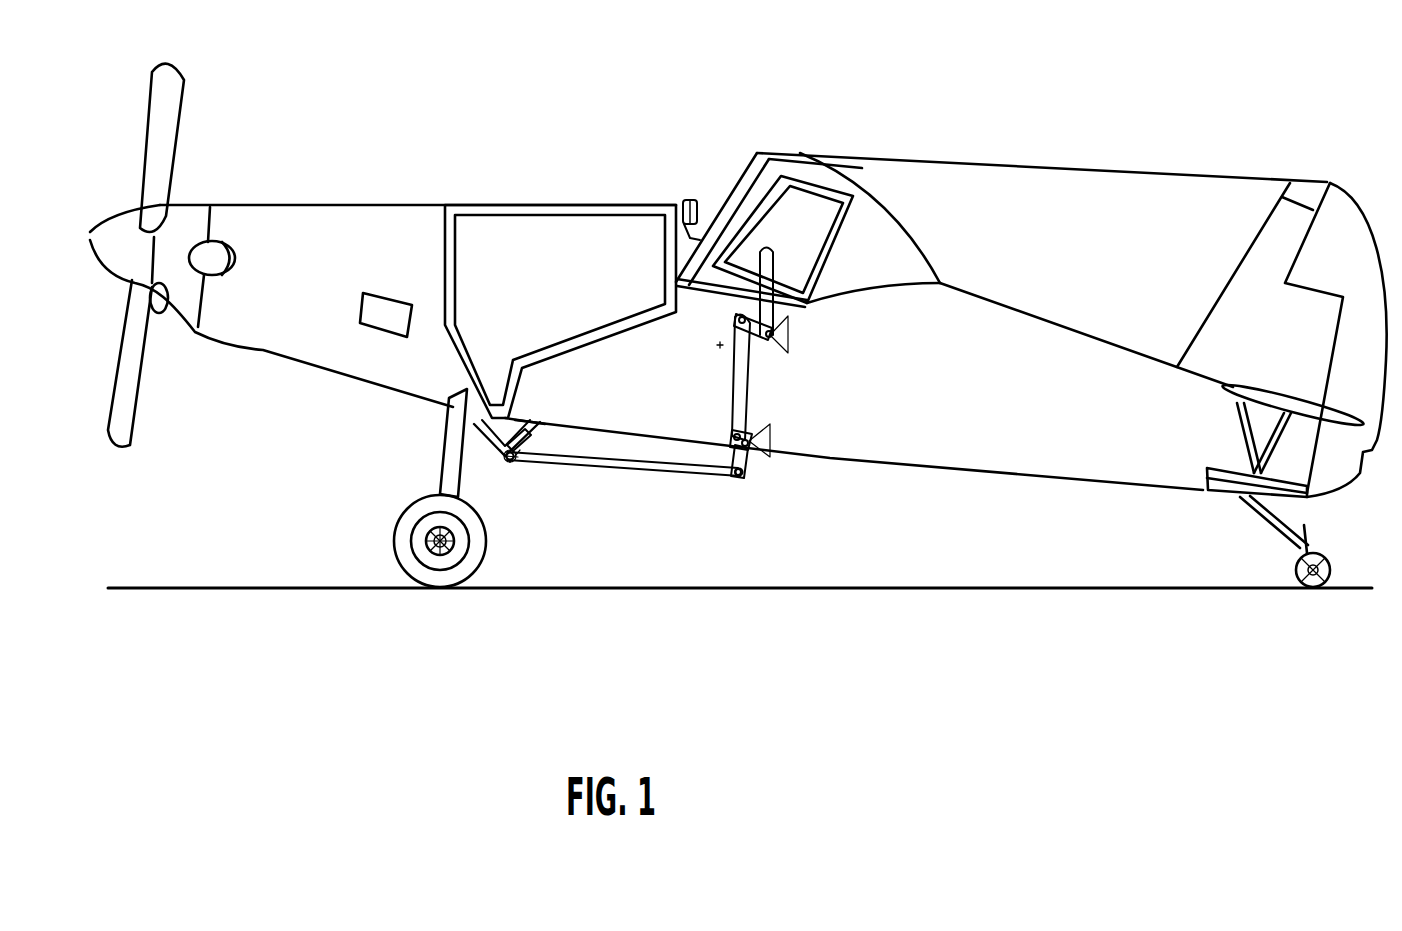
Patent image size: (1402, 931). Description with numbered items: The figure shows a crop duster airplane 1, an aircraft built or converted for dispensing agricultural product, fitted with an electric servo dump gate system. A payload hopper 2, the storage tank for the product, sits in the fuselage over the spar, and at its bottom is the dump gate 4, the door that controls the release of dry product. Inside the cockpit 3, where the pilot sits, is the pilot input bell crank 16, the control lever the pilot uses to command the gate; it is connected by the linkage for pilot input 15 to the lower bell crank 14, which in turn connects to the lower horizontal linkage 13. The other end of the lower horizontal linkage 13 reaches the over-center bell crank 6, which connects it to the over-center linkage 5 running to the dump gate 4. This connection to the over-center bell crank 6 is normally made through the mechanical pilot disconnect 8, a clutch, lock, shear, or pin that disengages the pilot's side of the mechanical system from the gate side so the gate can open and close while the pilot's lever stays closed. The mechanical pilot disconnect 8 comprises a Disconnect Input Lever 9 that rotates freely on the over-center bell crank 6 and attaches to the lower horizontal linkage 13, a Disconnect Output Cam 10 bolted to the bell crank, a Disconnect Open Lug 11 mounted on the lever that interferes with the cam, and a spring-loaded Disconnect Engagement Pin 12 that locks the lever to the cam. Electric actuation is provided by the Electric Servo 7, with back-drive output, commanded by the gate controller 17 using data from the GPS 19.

The crop duster airplane 1 is at (323, 203).
The payload hopper 2 is at (550, 202).
The cockpit 3 is at (723, 170).
The dump gate 4 is at (493, 434).
The over-center linkage 5 is at (497, 455).
The over-center bell crank 6 is at (540, 428).
The Electric Servo 7 is at (540, 442).
The mechanical pilot disconnect 8 is at (633, 563).
The Disconnect Input Lever 9 is at (510, 456).
The Disconnect Output Cam 10 is at (511, 456).
The Disconnect Open Lug 11 is at (505, 456).
The Disconnect Engagement Pin 12 is at (515, 456).
The lower horizontal linkage 13 is at (652, 472).
The lower bell crank 14 is at (742, 476).
The linkage for pilot input 15 is at (750, 413).
The pilot input bell crank 16 is at (778, 250).
The gate controller 17 is at (677, 210).
The GPS 19 is at (683, 200).